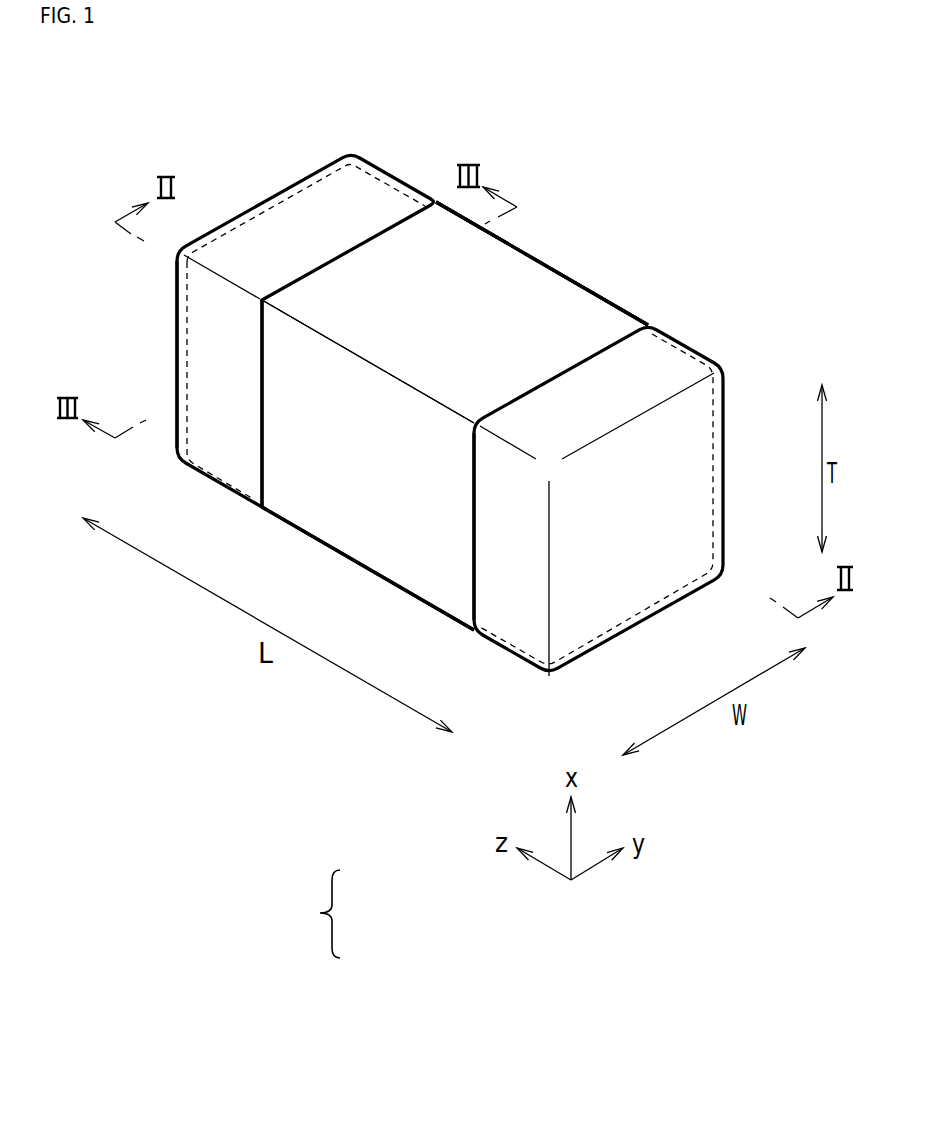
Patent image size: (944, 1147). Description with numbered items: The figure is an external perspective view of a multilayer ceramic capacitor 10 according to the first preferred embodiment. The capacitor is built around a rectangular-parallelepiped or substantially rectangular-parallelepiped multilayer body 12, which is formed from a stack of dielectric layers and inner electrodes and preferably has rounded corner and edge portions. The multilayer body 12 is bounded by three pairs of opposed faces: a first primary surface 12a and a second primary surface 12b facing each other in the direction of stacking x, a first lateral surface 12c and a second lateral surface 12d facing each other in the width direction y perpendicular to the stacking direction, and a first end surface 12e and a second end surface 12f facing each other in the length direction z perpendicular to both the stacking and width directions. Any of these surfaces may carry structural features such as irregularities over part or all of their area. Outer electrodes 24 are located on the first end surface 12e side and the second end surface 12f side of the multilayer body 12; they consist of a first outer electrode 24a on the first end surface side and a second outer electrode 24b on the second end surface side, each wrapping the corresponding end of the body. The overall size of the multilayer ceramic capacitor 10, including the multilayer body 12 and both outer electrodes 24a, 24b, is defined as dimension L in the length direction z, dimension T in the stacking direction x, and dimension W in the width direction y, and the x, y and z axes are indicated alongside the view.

The multilayer ceramic capacitor 10 is at (176, 121).
The multilayer body 12 is at (598, 332).
The first primary surface 12a is at (583, 307).
The second primary surface 12b is at (322, 518).
The first lateral surface 12c is at (362, 547).
The second lateral surface 12d is at (527, 287).
The first end surface 12e is at (290, 230).
The second end surface 12f is at (677, 470).
The outer electrodes 24 is at (335, 914).
The first outer electrode 24a is at (400, 174).
The second outer electrode 24b is at (697, 348).